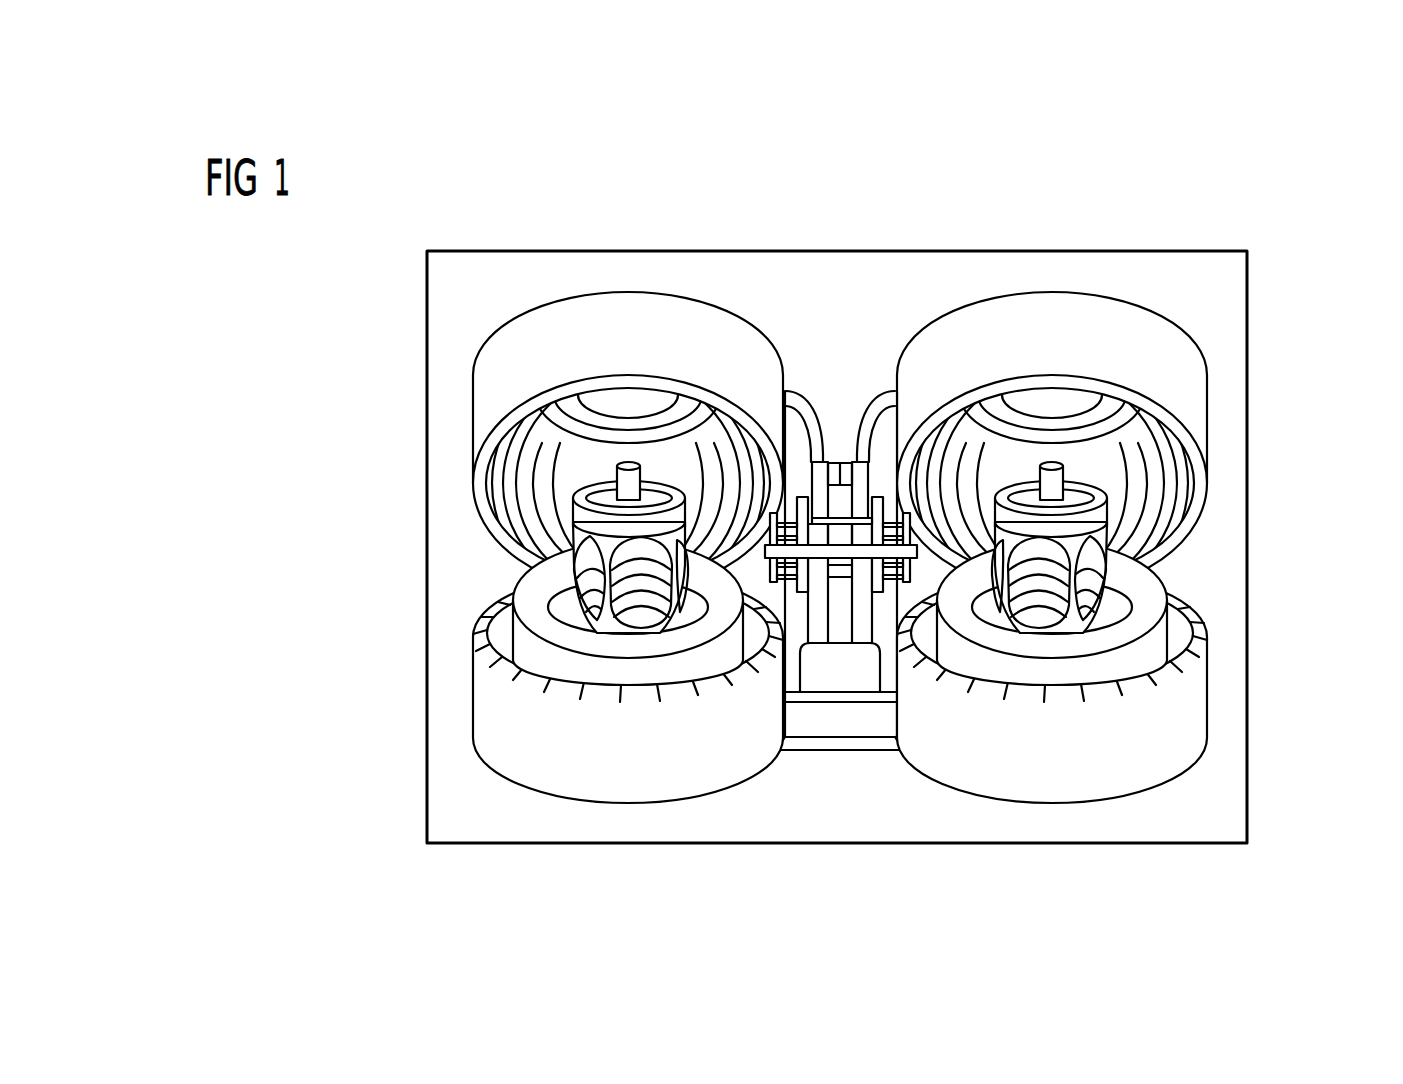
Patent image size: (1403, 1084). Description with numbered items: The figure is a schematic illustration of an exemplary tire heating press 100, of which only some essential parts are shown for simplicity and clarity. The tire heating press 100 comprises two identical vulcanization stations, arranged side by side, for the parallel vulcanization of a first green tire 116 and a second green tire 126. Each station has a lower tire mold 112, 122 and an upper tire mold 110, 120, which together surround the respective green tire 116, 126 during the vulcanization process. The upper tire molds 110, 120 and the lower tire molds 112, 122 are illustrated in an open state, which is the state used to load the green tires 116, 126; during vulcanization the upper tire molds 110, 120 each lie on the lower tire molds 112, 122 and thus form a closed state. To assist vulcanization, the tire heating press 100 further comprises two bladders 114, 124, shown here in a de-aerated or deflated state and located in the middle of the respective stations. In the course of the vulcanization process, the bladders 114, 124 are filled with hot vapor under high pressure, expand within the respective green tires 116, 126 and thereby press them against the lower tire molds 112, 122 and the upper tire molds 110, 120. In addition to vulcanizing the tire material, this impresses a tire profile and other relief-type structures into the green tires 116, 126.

The tire heating press 100 is at (1260, 309).
The upper tire mold 110 is at (1180, 375).
The lower tire mold 112 is at (1148, 730).
The bladder 114 is at (1085, 567).
The first green tire 116 is at (1147, 608).
The upper tire mold 120 is at (497, 375).
The lower tire mold 122 is at (527, 728).
The bladder 124 is at (565, 565).
The second green tire 126 is at (527, 607).